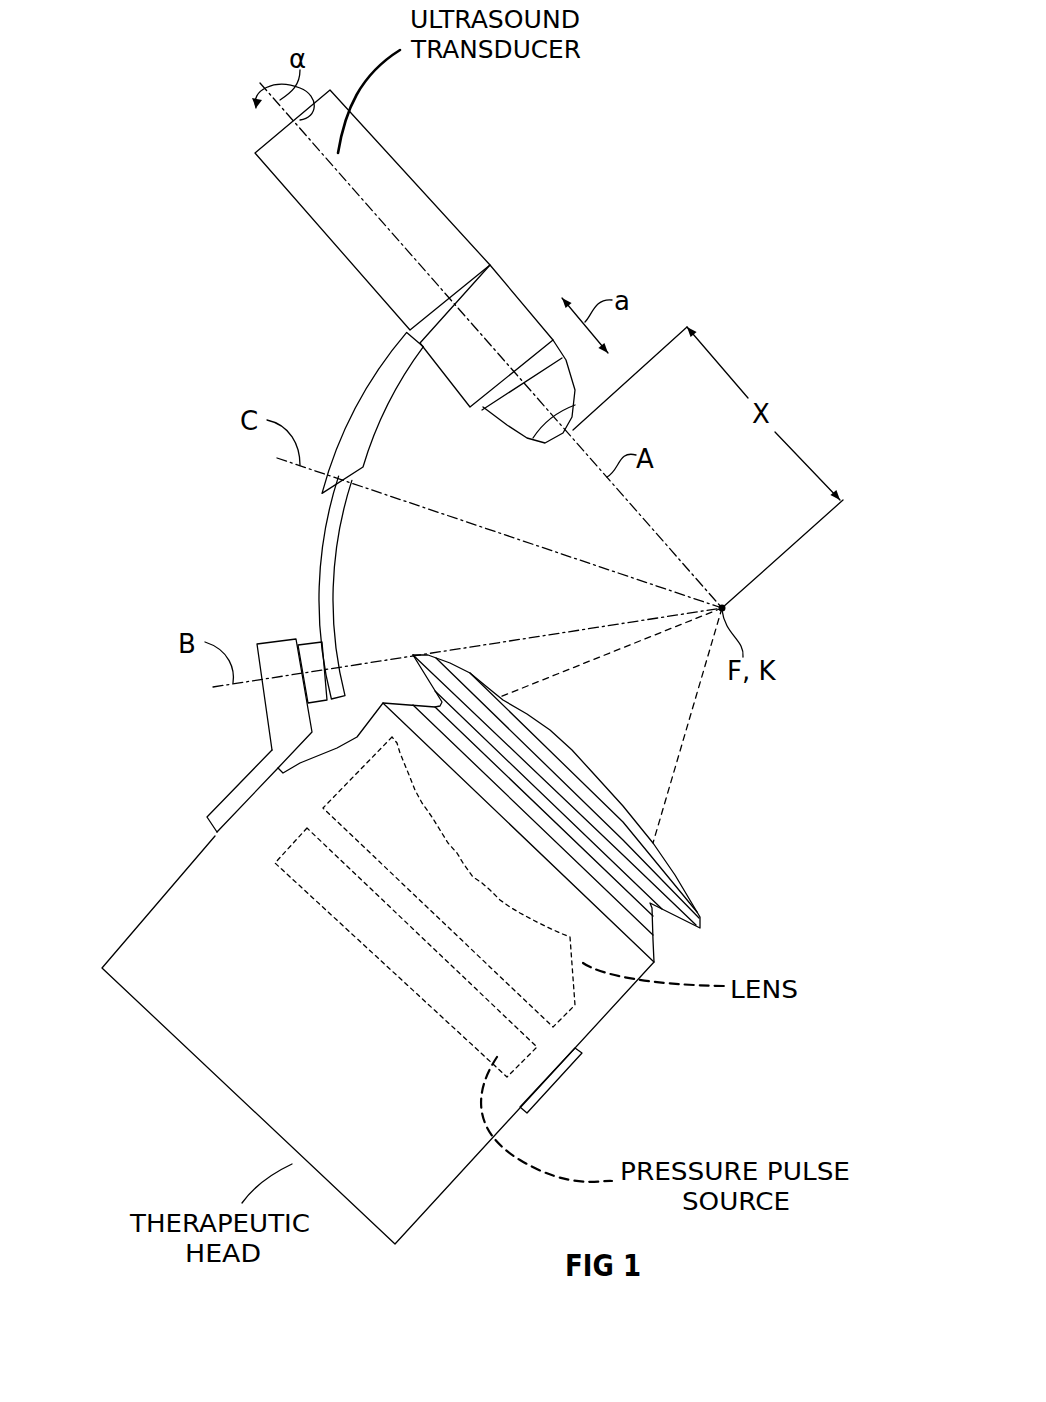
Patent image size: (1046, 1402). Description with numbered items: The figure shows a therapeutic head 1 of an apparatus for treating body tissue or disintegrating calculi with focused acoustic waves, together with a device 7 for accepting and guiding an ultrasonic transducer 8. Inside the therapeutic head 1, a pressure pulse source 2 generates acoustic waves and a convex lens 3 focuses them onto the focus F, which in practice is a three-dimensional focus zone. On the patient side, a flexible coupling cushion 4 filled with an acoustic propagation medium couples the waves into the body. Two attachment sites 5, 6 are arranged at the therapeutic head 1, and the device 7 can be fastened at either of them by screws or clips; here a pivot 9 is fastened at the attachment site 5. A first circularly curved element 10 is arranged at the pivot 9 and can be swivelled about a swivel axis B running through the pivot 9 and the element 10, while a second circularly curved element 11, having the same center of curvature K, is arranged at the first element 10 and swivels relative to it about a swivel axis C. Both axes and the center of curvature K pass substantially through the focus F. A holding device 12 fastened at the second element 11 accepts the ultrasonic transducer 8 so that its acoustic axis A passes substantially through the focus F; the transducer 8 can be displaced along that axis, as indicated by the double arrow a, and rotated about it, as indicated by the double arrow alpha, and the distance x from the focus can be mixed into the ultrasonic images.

The therapeutic head 1 is at (233, 1141).
The pressure pulse source 2 is at (490, 1043).
The convex lens 3 is at (572, 990).
The flexible coupling cushion 4 is at (662, 857).
The attachment site 5 is at (228, 826).
The attachment site 6 is at (547, 1085).
The device for accepting and guiding an ultrasonic transducer 7 is at (235, 507).
The ultrasonic transducer 8 is at (393, 187).
The pivot 9 is at (280, 707).
The first bent element 10 is at (333, 562).
The second bent element 11 is at (380, 383).
The holding device 12 is at (493, 298).